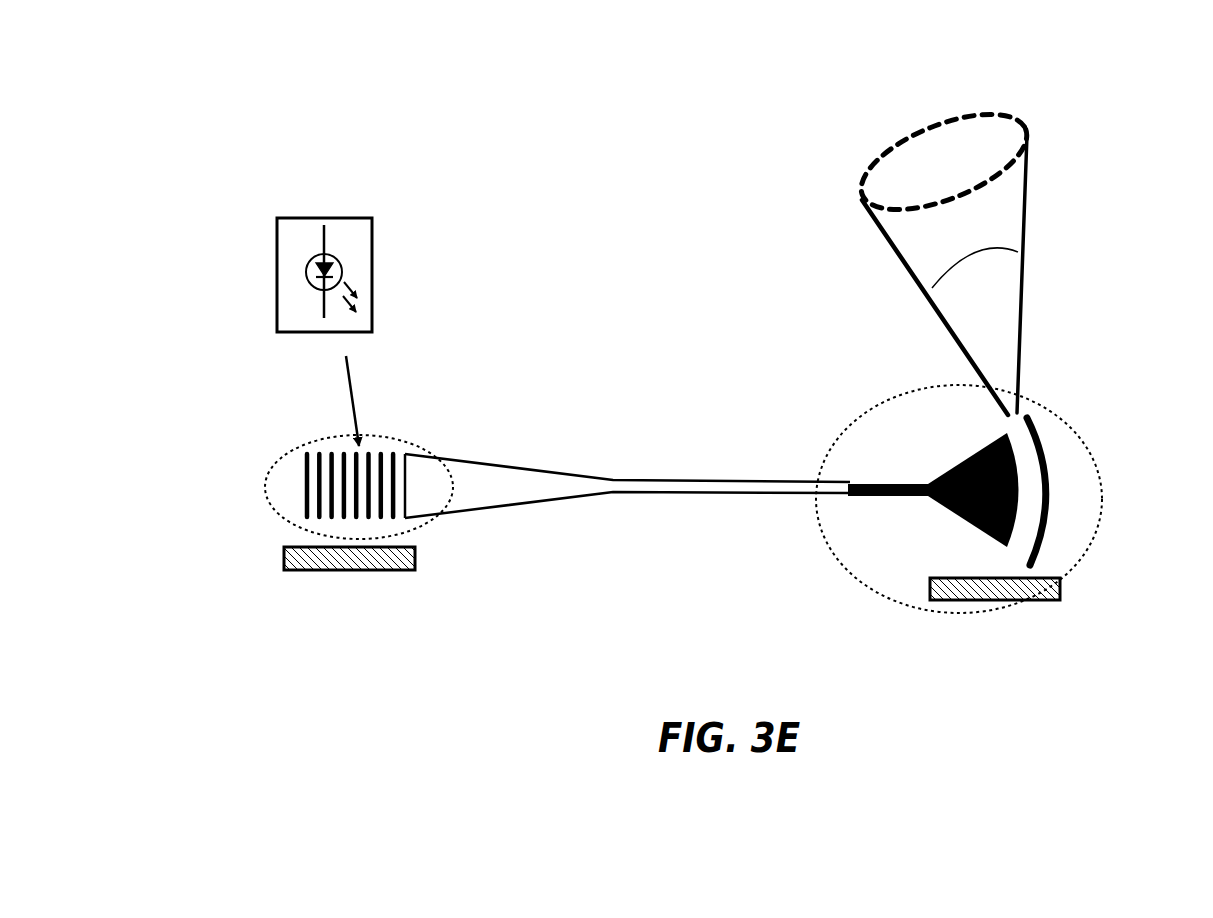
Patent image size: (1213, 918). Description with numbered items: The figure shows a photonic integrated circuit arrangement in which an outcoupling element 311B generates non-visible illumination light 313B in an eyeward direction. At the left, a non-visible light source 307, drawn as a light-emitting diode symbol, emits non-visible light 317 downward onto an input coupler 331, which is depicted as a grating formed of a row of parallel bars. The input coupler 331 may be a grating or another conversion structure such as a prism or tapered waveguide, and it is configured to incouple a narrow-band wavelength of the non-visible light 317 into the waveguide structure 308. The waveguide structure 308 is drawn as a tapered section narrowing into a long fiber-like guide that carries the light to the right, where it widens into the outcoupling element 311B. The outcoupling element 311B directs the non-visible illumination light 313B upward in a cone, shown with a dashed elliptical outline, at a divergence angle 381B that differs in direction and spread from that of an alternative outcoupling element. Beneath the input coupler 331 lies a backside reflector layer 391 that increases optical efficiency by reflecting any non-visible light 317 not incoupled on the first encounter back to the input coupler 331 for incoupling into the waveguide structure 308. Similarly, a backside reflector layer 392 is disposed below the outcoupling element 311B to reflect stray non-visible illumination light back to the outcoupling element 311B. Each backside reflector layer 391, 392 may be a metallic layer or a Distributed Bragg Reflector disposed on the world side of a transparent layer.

The non-visible light source 307 is at (372, 267).
The non-visible light 317 is at (355, 390).
The input coupler 331 is at (265, 475).
The waveguide structure 308 is at (707, 480).
The outcoupling element 311B is at (1087, 447).
The non-visible illumination light 313B is at (1008, 120).
The divergence angle 381B is at (963, 253).
The backside reflector layer 391 is at (284, 557).
The backside reflector layer 392 is at (1027, 598).